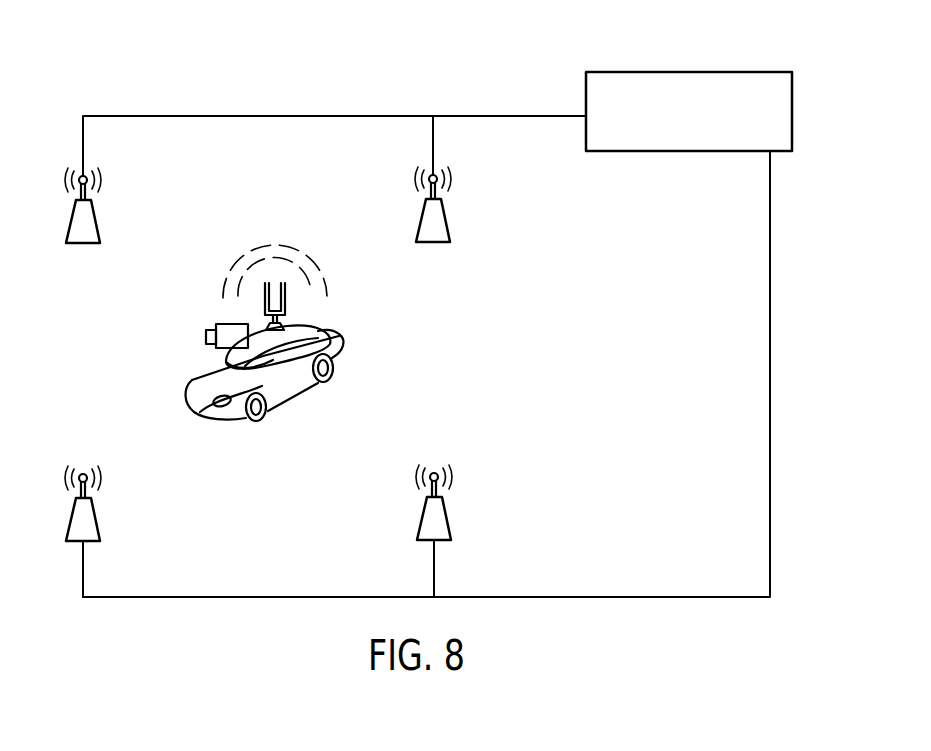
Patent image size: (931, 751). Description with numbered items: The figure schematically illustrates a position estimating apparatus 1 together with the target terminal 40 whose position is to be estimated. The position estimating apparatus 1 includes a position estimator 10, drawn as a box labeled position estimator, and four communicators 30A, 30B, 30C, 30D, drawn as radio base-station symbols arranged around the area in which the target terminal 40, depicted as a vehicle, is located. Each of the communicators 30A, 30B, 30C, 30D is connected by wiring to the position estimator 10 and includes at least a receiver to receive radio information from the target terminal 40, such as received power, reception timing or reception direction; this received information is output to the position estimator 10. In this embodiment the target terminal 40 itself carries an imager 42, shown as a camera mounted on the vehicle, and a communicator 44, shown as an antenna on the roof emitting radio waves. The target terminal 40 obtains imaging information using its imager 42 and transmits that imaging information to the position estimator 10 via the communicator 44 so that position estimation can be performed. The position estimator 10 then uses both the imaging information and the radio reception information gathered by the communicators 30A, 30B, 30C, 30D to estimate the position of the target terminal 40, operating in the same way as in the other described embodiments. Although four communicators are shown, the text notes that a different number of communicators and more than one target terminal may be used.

The position estimating apparatus 1 is at (159, 80).
The position estimator 10 is at (713, 70).
The communicator 30A is at (94, 222).
The communicator 30B is at (444, 221).
The communicator 30C is at (94, 520).
The communicator 30D is at (445, 519).
The target terminal 40 is at (334, 329).
The imager 42 is at (205, 337).
The communicator 44 is at (286, 290).